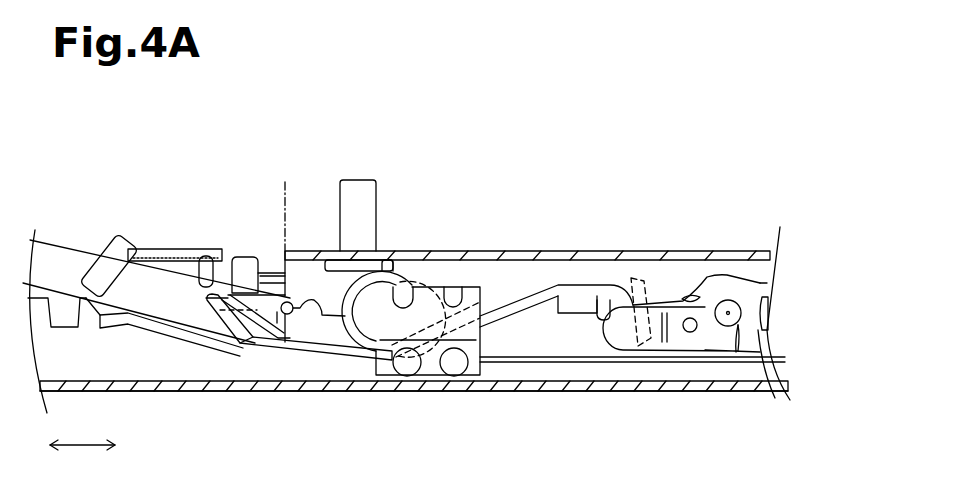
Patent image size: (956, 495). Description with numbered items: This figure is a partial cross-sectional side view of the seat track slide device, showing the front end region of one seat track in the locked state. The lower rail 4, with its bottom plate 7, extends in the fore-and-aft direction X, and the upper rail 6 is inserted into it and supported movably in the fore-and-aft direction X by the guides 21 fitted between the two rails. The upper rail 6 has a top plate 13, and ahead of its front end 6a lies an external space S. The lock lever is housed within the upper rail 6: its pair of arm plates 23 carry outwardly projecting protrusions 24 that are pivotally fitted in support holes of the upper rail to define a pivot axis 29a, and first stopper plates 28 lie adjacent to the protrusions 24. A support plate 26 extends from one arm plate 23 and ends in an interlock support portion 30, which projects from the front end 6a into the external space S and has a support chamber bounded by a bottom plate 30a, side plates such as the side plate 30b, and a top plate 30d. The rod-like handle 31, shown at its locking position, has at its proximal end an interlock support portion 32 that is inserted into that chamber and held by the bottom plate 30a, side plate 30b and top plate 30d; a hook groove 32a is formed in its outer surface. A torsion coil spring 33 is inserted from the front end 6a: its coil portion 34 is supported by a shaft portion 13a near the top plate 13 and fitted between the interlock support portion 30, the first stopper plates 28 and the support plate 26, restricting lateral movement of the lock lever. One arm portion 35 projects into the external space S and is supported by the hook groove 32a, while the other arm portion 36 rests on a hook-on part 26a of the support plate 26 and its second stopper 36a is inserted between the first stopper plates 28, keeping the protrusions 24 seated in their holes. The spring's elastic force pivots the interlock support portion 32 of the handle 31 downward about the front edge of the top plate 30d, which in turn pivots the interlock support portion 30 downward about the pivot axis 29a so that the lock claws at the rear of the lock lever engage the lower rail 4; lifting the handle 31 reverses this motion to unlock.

The handle 31 is at (75, 247).
The top plate 30d is at (150, 250).
The hook groove 32a is at (206, 262).
The external space S is at (274, 216).
The front end 6a is at (288, 252).
The shaft portion 13a is at (384, 266).
The coil portion 34 is at (427, 266).
The top plate 13 is at (540, 255).
The hook-on part 26a is at (578, 296).
The arm portion 36 is at (537, 302).
The second stopper 36a is at (627, 304).
The pivot axis 29a is at (720, 300).
The upper rail 6 is at (748, 248).
The torsion coil spring 33 is at (340, 297).
The first stopper plate 28 is at (617, 333).
The side plate 30b is at (88, 300).
The interlock support portion 32 is at (148, 308).
The interlock support portion 30 is at (167, 323).
The bottom plate 30a is at (217, 342).
The arm portion 35 is at (325, 348).
The guide 21 is at (432, 370).
The support plate 26 is at (522, 350).
The bottom plate 7 is at (587, 385).
The lower rail 4 is at (611, 394).
The protrusion 24 is at (737, 328).
The arm plate 23 is at (763, 340).
The fore-and-aft direction X is at (82, 443).